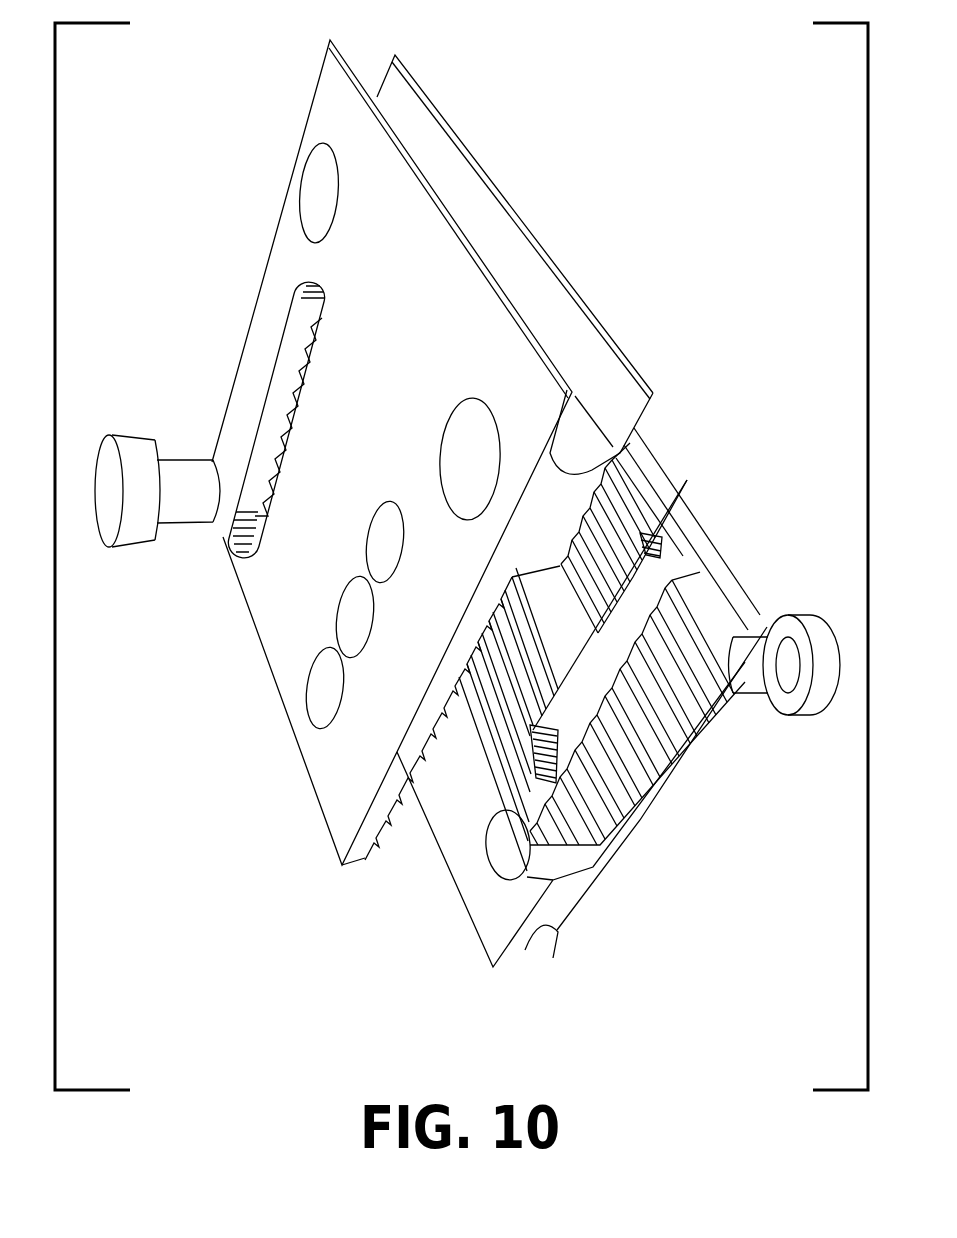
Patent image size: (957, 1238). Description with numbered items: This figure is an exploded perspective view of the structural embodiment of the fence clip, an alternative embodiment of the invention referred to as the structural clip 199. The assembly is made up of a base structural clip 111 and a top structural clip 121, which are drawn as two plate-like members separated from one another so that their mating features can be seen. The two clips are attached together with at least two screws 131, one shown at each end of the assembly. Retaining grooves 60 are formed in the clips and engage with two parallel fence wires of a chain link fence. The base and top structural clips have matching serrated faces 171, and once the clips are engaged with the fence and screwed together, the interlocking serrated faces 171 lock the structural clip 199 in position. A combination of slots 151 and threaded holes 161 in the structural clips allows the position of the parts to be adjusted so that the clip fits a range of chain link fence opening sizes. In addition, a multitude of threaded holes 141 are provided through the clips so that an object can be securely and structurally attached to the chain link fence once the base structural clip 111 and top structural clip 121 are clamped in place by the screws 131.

The retaining grooves 60 is at (483, 225).
The base structural clip 111 is at (465, 828).
The top structural clip 121 is at (293, 652).
The screws 131 is at (135, 532).
The threaded holes 141 is at (317, 192).
The slots 151 is at (672, 573).
The threaded holes 161 is at (327, 697).
The serrated faces 171 is at (623, 755).
The structural clip 199 is at (592, 204).